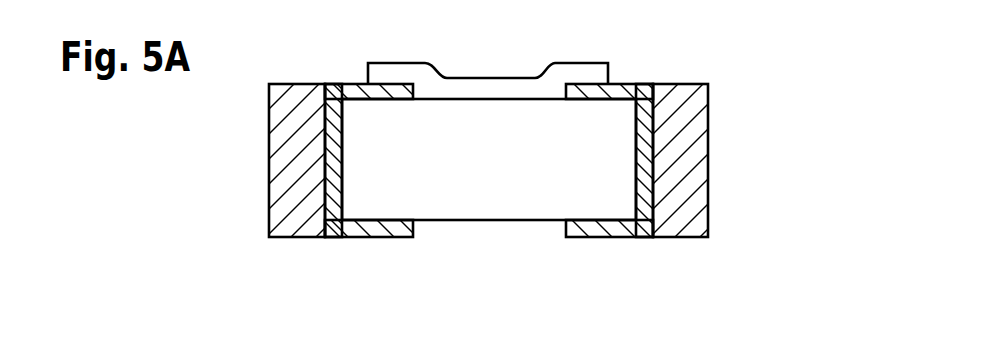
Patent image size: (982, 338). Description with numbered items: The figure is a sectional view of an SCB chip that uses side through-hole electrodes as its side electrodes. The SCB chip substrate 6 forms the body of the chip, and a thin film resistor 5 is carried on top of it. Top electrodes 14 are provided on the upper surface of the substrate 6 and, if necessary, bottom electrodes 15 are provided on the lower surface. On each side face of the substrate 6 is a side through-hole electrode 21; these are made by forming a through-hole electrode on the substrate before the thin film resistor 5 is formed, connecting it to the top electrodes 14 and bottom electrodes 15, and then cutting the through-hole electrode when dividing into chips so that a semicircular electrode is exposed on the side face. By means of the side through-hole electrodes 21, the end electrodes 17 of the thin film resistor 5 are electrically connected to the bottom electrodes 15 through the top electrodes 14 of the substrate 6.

The thin film resistor 5 is at (488, 88).
The SCB chip substrate 6 is at (477, 183).
The top electrodes 14 is at (627, 82).
The bottom electrodes 15 is at (610, 237).
The end electrodes 17 is at (587, 70).
The side through-hole electrodes 21 is at (300, 152).